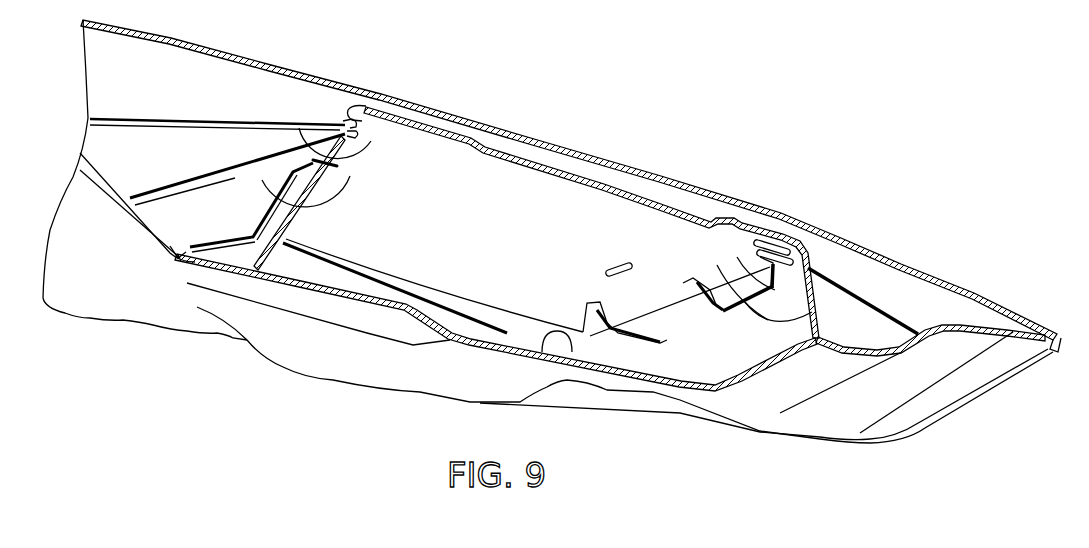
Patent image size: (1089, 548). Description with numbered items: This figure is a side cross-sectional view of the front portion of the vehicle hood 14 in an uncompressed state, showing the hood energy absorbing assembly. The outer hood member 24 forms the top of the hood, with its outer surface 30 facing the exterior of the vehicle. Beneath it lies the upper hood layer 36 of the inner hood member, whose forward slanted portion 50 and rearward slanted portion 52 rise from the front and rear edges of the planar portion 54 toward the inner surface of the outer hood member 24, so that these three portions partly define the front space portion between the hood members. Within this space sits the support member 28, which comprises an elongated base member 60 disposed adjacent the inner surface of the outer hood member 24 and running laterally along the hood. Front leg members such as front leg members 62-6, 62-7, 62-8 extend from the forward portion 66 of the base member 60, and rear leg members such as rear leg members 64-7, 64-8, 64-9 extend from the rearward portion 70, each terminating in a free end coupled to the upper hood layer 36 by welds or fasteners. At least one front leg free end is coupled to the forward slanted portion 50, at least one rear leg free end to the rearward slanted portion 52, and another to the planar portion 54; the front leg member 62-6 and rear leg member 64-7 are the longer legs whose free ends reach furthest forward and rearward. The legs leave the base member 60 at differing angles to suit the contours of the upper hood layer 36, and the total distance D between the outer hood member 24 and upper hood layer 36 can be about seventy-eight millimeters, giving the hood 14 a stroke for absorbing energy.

The vehicle hood 14 is at (814, 136).
The outer hood member 24 is at (977, 291).
The support member 28 is at (689, 206).
The outer surface 30 is at (540, 140).
The upper hood layer 36 is at (782, 392).
The forward slanted portion 50 is at (931, 330).
The rearward slanted portion 52 is at (97, 168).
The planar portion 54 is at (568, 350).
The elongated base member 60 is at (603, 184).
The front leg member 62-6 is at (665, 352).
The front leg member 62-7 is at (848, 290).
The front leg member 62-8 is at (847, 345).
The rear leg member 64-7 is at (178, 272).
The rear leg member 64-8 is at (200, 176).
The rear leg member 64-9 is at (278, 120).
The forward portion 66 is at (803, 250).
The rearward portion 70 is at (347, 110).
The total distance D is at (865, 274).